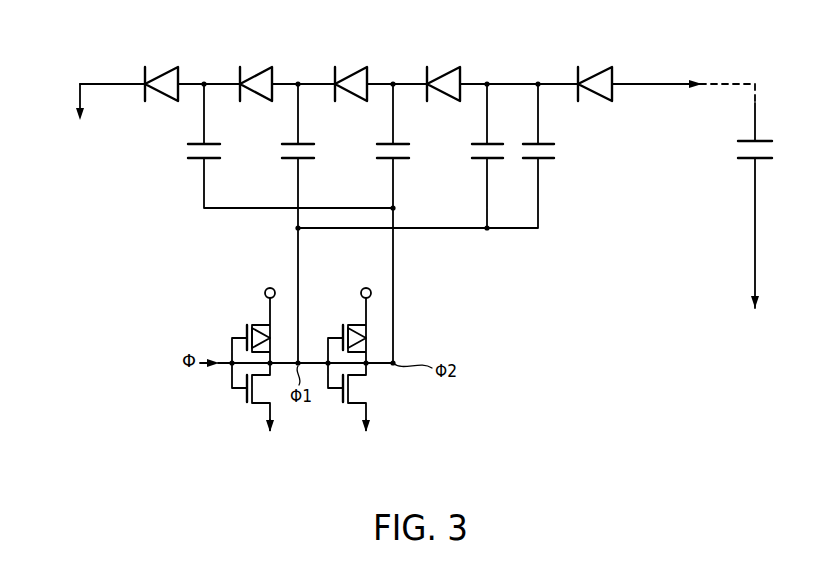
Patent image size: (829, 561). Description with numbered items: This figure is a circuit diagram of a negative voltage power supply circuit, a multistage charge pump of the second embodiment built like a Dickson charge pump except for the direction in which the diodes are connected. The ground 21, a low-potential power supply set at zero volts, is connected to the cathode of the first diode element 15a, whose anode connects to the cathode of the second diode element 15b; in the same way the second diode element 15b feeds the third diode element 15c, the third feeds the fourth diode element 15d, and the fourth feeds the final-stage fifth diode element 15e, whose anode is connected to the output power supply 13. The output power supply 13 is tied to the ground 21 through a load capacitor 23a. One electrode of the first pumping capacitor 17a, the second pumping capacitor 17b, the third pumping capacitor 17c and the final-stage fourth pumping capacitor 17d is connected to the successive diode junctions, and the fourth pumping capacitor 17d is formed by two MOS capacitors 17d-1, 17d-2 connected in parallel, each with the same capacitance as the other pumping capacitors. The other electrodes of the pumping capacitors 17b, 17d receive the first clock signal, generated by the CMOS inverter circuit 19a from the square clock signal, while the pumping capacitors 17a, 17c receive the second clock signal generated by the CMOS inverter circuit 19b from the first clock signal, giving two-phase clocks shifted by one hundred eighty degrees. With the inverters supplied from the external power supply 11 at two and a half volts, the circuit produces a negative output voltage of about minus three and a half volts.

The external power supply 11 is at (270, 288).
The output power supply 13 is at (698, 78).
The first diode element 15a is at (178, 66).
The second diode element 15b is at (272, 66).
The third diode element 15c is at (367, 66).
The fourth diode element 15d is at (460, 66).
The fifth diode element 15e is at (612, 66).
The first pumping capacitor 17a is at (215, 162).
The second pumping capacitor 17b is at (310, 162).
The third pumping capacitor 17c is at (405, 162).
The fourth pumping capacitor 17d is at (566, 176).
The MOS capacitor 17d-1 is at (497, 163).
The MOS capacitor 17d-2 is at (542, 162).
The CMOS inverter circuit 19a is at (255, 362).
The CMOS inverter circuit 19b is at (352, 362).
The ground 21 is at (80, 125).
The load capacitor 23a is at (734, 149).